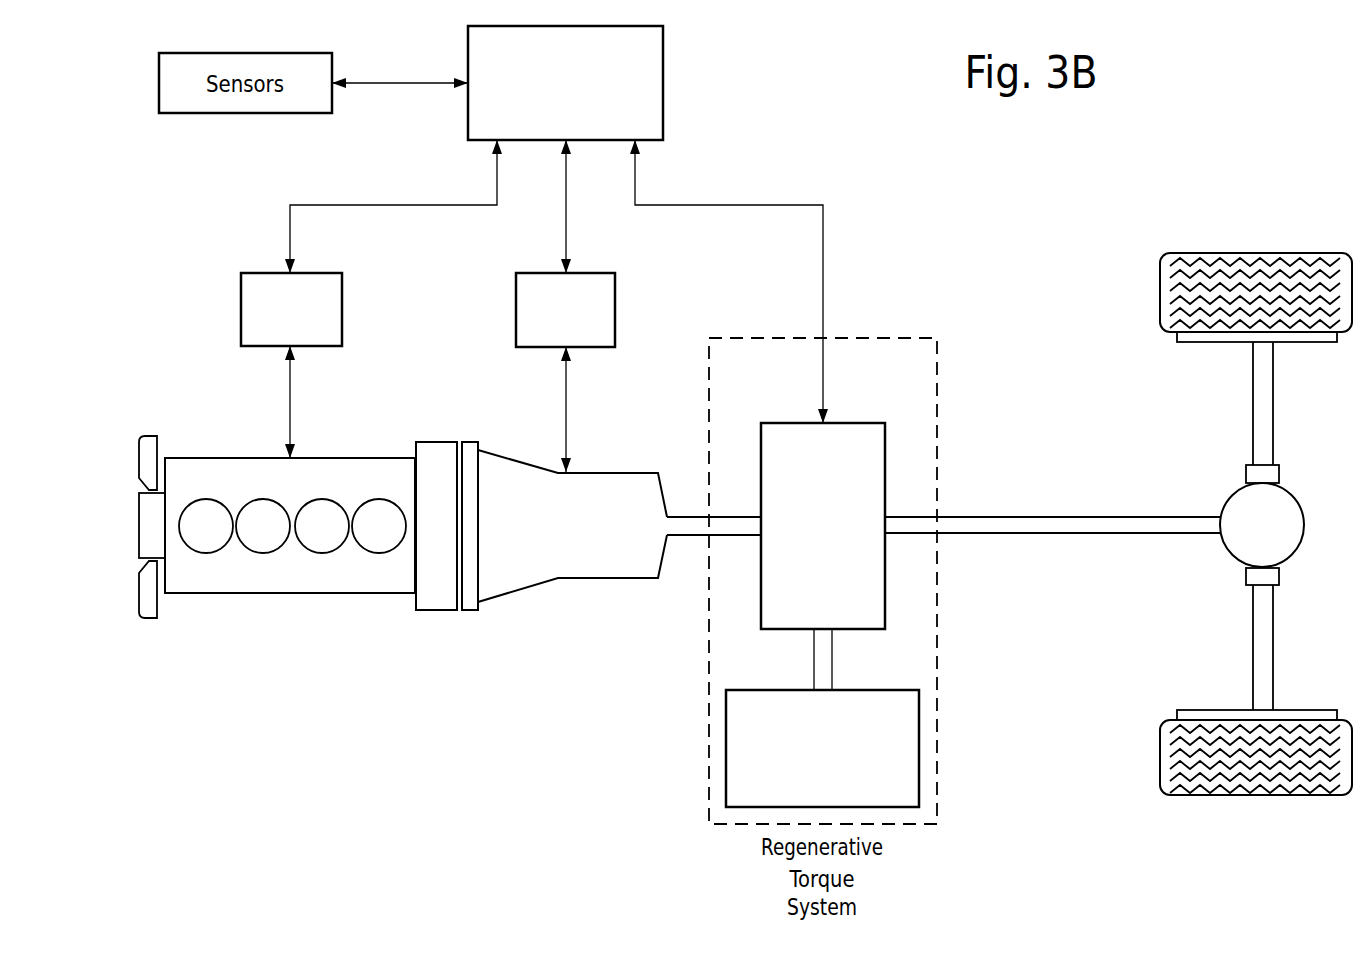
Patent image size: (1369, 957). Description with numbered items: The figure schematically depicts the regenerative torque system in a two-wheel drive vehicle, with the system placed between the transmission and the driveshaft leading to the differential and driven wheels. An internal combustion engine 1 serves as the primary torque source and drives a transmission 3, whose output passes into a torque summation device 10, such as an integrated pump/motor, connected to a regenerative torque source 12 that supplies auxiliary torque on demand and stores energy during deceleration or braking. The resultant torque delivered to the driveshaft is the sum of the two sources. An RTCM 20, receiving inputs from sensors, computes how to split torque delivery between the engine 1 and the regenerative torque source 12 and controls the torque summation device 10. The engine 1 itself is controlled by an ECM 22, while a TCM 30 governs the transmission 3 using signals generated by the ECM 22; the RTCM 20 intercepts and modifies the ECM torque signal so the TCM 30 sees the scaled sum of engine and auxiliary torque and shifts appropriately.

The internal combustion engine 1 is at (215, 458).
The transmission 3 is at (625, 473).
The torque summation device 10 is at (795, 423).
The regenerative torque source 12 is at (726, 722).
The RTCM 20 is at (663, 83).
The ECM 22 is at (241, 300).
The TCM 30 is at (615, 305).